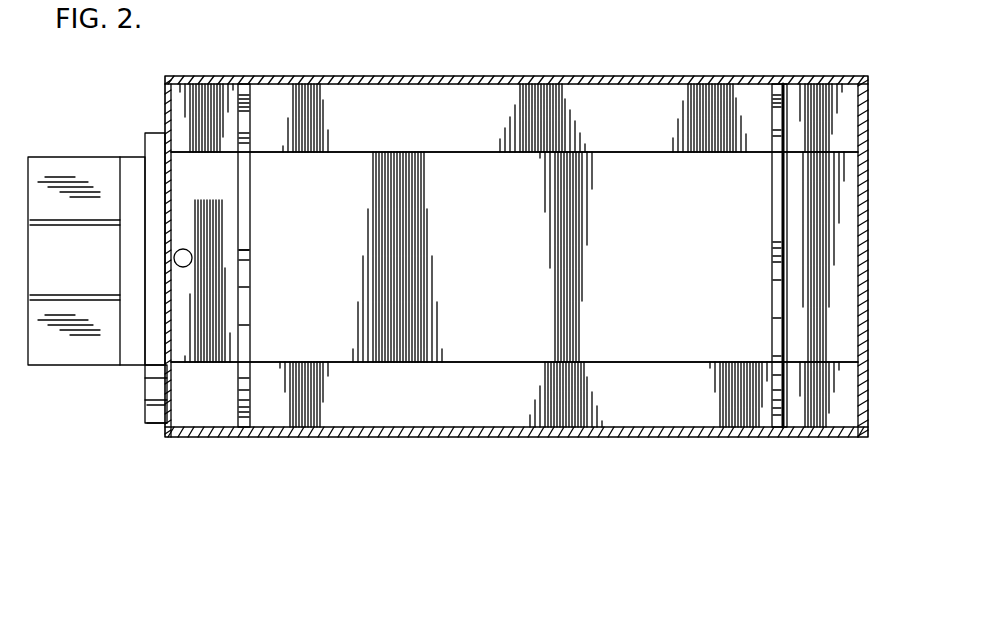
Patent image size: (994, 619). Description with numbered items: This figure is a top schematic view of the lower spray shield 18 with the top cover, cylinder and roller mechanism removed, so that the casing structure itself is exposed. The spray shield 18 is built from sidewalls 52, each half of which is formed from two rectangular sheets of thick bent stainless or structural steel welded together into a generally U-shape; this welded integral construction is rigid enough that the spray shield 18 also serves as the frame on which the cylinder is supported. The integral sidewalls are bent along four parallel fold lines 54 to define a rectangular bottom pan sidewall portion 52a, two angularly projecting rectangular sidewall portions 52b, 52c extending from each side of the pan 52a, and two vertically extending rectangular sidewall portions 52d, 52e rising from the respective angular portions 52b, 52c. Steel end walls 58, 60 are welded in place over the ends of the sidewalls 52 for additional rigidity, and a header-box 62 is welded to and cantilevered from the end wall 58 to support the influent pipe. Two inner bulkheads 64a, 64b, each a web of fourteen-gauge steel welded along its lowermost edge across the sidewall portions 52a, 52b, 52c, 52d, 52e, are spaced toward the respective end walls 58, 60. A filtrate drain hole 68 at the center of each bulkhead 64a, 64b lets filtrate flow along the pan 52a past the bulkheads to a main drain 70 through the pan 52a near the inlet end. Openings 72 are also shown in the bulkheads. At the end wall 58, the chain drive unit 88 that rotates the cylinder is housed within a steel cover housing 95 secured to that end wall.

The lower spray shield 18 is at (724, 54).
The sidewalls 52 is at (376, 402).
The bottom pan sidewall portion 52a is at (517, 264).
The angularly projecting sidewall portion 52b is at (522, 414).
The angularly projecting sidewall portion 52c is at (496, 130).
The vertically extending sidewall portion 52d is at (474, 77).
The vertically extending sidewall portion 52e is at (458, 437).
The fold lines 54 is at (592, 84).
The end wall 58 is at (165, 110).
The end wall 60 is at (868, 224).
The header-box 62 is at (51, 350).
The inner bulkhead 64a is at (250, 184).
The inner bulkhead 64b is at (774, 180).
The filtrate drain hole 68 is at (250, 255).
The main drain 70 is at (185, 248).
The partition opening 72 is at (250, 332).
The chain drive unit 88 is at (146, 388).
The steel cover housing 95 is at (150, 424).